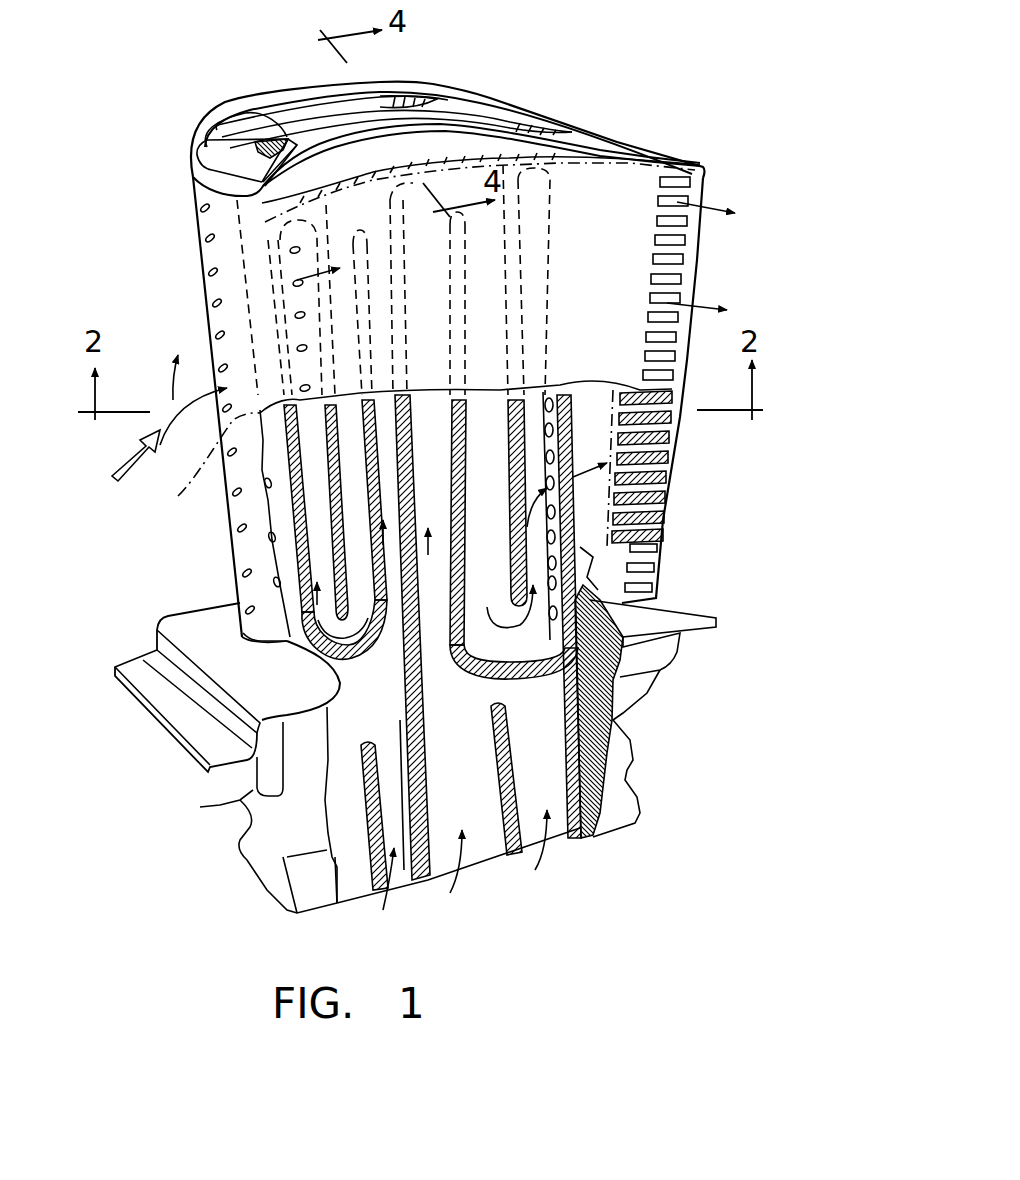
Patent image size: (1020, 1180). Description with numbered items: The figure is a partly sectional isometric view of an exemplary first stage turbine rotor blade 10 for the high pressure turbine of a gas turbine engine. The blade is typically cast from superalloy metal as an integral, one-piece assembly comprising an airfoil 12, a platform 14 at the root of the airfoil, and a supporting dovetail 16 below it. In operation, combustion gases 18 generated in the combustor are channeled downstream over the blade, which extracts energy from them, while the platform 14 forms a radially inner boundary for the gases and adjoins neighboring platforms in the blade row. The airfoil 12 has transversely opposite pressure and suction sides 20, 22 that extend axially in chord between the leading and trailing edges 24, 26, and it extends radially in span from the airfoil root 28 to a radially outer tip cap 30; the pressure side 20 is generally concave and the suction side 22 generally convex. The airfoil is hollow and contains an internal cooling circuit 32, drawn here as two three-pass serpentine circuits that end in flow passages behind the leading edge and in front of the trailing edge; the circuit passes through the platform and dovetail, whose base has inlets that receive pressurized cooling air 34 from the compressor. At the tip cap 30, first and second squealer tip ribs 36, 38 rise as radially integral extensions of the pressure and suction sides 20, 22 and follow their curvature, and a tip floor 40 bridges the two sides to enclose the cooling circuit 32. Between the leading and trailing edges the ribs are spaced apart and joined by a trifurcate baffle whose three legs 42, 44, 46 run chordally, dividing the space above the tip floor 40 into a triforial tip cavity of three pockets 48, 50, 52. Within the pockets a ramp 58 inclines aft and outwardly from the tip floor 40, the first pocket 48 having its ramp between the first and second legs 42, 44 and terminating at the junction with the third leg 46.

The turbine rotor blade 10 is at (112, 188).
The airfoil 12 is at (712, 188).
The platform 14 is at (180, 610).
The dovetail 16 is at (240, 806).
The combustion gases 18 is at (130, 457).
The pressure side 20 is at (440, 274).
The suction side 22 is at (192, 218).
The leading edge 24 is at (172, 503).
The trailing edge 26 is at (697, 278).
The airfoil root 28 is at (253, 643).
The tip cap 30 is at (440, 84).
The internal cooling circuit 32 is at (470, 712).
The cooling air 34 is at (458, 880).
The first squealer tip rib 36 is at (497, 130).
The second squealer tip rib 38 is at (396, 82).
The tip floor 40 is at (210, 158).
The first baffle leg 42 is at (290, 170).
The second baffle leg 44 is at (238, 124).
The third baffle leg 46 is at (357, 114).
The first tip pocket 48 is at (244, 176).
The second tip pocket 50 is at (452, 122).
The third tip pocket 52 is at (280, 110).
The ramp 58 is at (268, 143).